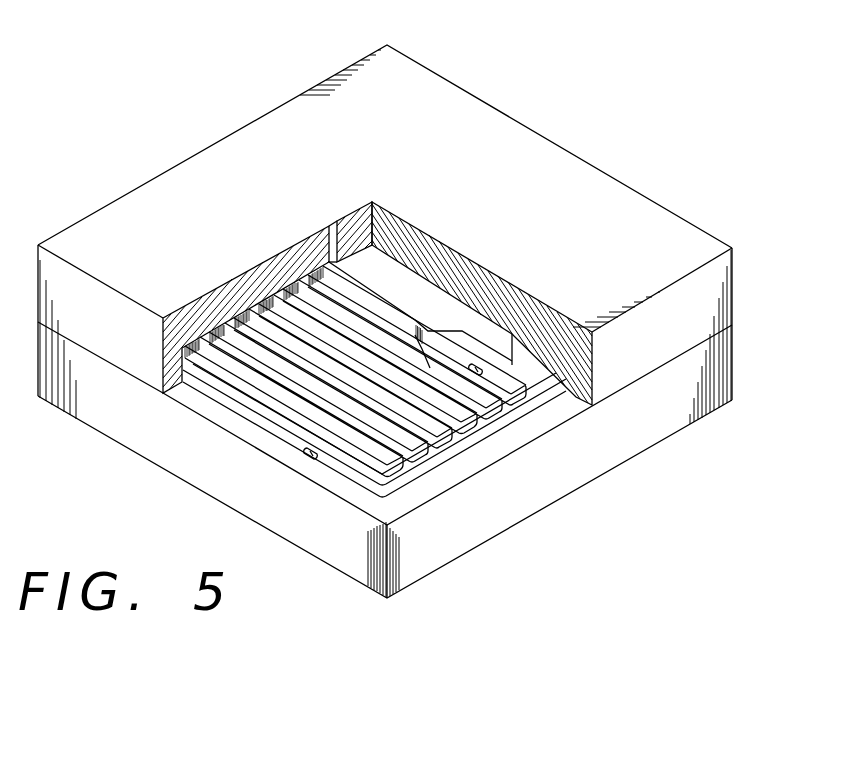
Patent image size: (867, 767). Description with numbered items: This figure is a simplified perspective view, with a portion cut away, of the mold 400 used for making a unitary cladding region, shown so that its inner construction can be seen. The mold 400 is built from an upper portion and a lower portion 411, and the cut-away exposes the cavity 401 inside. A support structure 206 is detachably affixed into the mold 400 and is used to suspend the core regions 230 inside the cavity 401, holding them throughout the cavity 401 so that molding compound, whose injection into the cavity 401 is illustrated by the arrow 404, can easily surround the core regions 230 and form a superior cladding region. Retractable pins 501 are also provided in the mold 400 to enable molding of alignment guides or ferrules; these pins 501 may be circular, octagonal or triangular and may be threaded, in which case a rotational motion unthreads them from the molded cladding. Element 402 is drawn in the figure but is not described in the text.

The mold 400 is at (646, 135).
The cavity 401 is at (395, 278).
The sidewall 402 is at (327, 220).
The arrow 404 is at (332, 216).
The lower portion 411 is at (638, 453).
The support structure 206 is at (462, 456).
The core region 230 is at (465, 312).
The retractable pins 501 is at (302, 457).